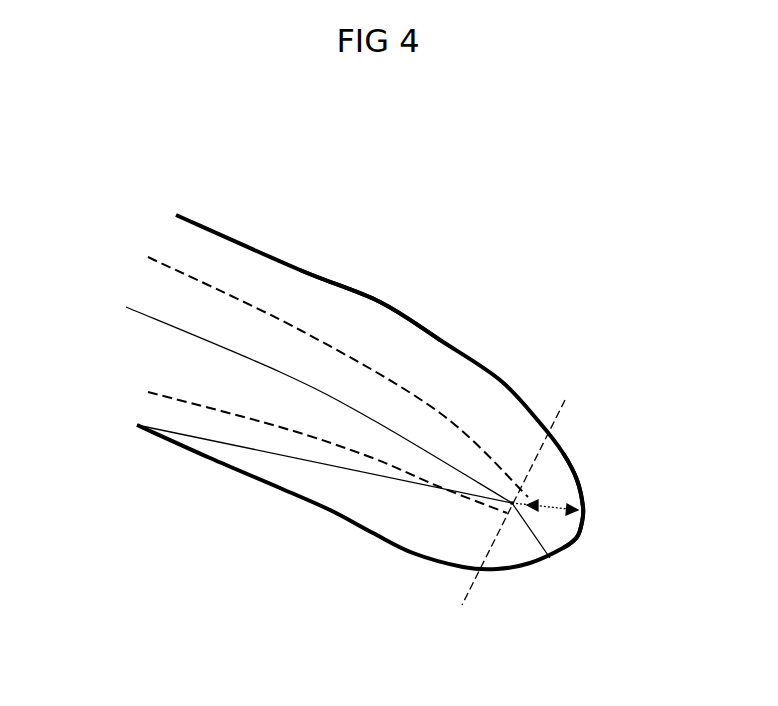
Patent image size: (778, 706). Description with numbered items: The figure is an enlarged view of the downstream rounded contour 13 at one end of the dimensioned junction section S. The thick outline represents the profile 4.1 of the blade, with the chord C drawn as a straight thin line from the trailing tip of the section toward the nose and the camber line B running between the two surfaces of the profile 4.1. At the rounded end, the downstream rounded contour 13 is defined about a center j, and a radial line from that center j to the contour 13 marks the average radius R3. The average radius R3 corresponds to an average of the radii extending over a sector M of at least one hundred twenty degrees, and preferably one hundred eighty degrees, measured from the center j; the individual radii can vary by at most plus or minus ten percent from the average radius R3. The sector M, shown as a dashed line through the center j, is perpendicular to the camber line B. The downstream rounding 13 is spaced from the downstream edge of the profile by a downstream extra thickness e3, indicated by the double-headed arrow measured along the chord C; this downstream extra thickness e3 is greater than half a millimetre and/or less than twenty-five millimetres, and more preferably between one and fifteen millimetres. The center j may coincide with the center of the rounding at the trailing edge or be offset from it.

The profile 4.1 is at (230, 295).
The junction section S is at (412, 292).
The sector M is at (567, 423).
The camber line B is at (175, 329).
The chord C is at (257, 450).
The center j is at (512, 503).
The average radius R3 is at (535, 538).
The downstream extra thickness e3 is at (557, 503).
The downstream rounded contour 13 is at (577, 542).